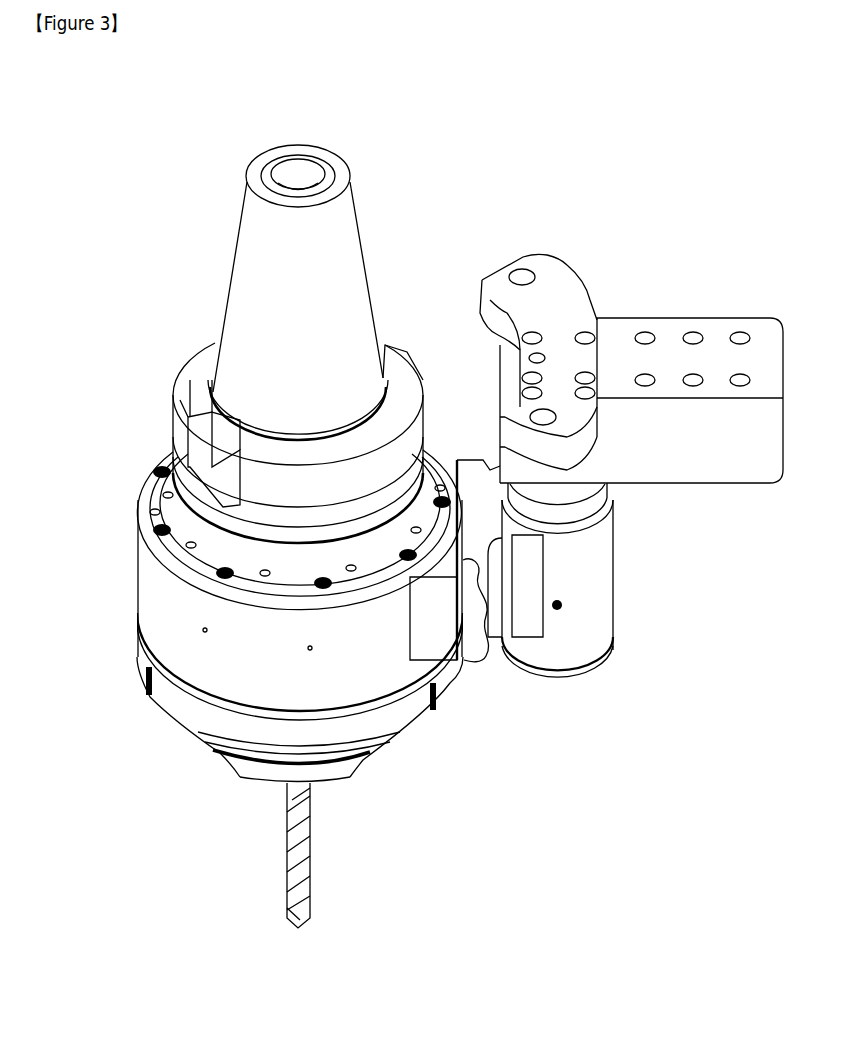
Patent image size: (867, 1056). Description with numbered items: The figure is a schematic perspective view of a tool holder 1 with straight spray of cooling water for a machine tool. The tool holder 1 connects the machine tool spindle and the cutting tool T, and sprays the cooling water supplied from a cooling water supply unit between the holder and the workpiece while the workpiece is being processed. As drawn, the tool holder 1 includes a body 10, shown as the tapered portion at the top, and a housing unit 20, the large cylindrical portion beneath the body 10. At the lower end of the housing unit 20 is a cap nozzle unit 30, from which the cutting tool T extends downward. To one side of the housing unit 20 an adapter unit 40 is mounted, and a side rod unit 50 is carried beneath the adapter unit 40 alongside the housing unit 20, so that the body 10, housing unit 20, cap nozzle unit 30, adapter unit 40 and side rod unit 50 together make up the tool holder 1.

The tool holder 1 is at (582, 101).
The body 10 is at (245, 268).
The housing unit 20 is at (157, 596).
The cap nozzle unit 30 is at (245, 785).
The adapter unit 40 is at (703, 465).
The side rod unit 50 is at (598, 583).
The cutting tool T is at (312, 822).